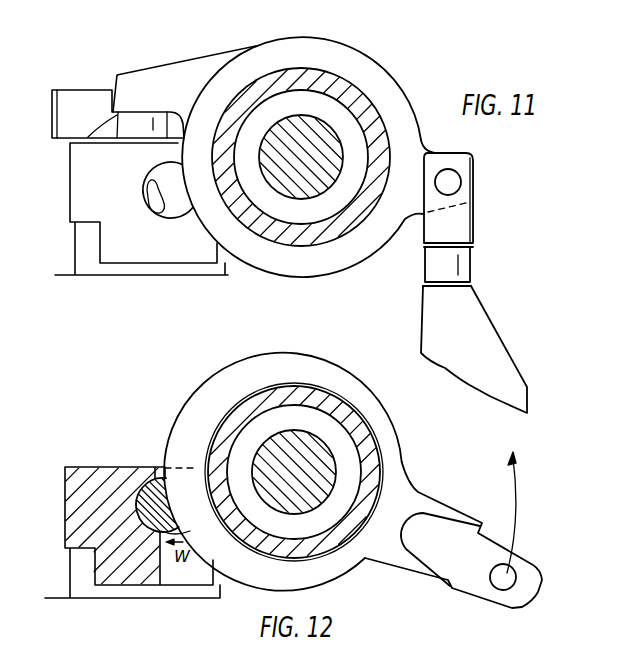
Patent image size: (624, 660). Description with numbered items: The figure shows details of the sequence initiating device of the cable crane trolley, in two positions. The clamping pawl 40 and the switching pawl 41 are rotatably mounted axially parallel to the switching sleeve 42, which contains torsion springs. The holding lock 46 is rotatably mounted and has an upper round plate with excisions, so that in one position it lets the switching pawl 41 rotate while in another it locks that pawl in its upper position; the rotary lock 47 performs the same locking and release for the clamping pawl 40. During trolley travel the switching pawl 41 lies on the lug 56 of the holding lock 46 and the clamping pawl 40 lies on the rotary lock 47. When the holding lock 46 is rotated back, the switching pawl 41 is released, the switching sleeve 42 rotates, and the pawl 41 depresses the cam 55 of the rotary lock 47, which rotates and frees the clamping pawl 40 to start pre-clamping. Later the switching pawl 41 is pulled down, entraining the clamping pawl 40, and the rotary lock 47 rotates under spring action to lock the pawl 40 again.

In FIG. 12, the clamping pawl 40 is at (203, 408).
In FIG. 11, the switching pawl 41 is at (142, 83).
In FIG. 11, the switching sleeve 42 is at (322, 73).
In FIG. 11, the holding lock 46 is at (73, 102).
In FIG. 11, the rotary lock 47 is at (168, 162).
In FIG. 12, the rotary lock 47 is at (155, 467).
In FIG. 11, the cam 55 is at (152, 212).
In FIG. 11, the lug 56 is at (115, 116).